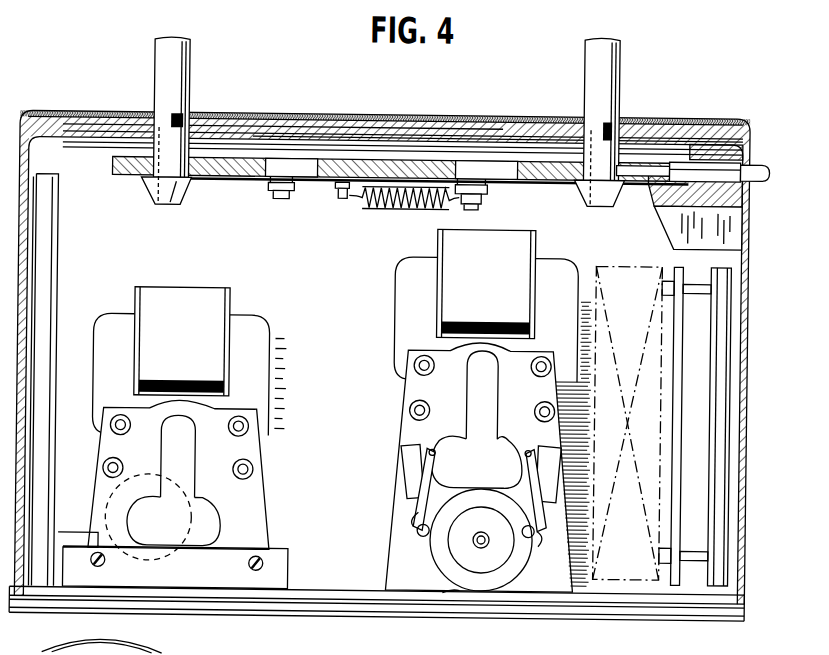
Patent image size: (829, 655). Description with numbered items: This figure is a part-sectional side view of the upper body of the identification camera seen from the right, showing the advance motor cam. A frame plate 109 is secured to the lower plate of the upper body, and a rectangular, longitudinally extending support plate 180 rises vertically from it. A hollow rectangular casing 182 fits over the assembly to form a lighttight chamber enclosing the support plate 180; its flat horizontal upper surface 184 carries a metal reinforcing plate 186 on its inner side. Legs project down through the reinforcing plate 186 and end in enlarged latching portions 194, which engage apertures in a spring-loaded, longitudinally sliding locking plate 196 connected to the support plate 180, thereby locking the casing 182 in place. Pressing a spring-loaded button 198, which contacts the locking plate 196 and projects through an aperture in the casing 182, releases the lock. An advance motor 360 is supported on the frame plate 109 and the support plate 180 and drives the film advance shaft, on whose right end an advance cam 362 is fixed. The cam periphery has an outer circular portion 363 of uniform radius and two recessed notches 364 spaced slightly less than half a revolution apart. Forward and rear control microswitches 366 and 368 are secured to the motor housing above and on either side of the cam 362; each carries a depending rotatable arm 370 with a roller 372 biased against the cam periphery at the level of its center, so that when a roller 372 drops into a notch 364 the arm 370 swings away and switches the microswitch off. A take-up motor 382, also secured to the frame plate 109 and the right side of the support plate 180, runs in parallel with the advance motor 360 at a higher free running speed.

The frame plate 109 is at (548, 602).
The support plate 180 is at (54, 140).
The casing 182 is at (533, 113).
The upper surface 184 is at (268, 117).
The reinforcing plate 186 is at (410, 122).
The latching portions 194 is at (160, 191).
The locking plate 196 is at (265, 186).
The button 198 is at (750, 168).
The advance motor 360 is at (390, 330).
The advance cam 362 is at (493, 582).
The outer circular portion 363 is at (462, 590).
The notches 364 is at (432, 546).
The forward control microswitch 366 is at (412, 468).
The rear control microswitch 368 is at (560, 463).
The arm 370 is at (420, 502).
The roller 372 is at (428, 540).
The take-up motor 382 is at (275, 339).